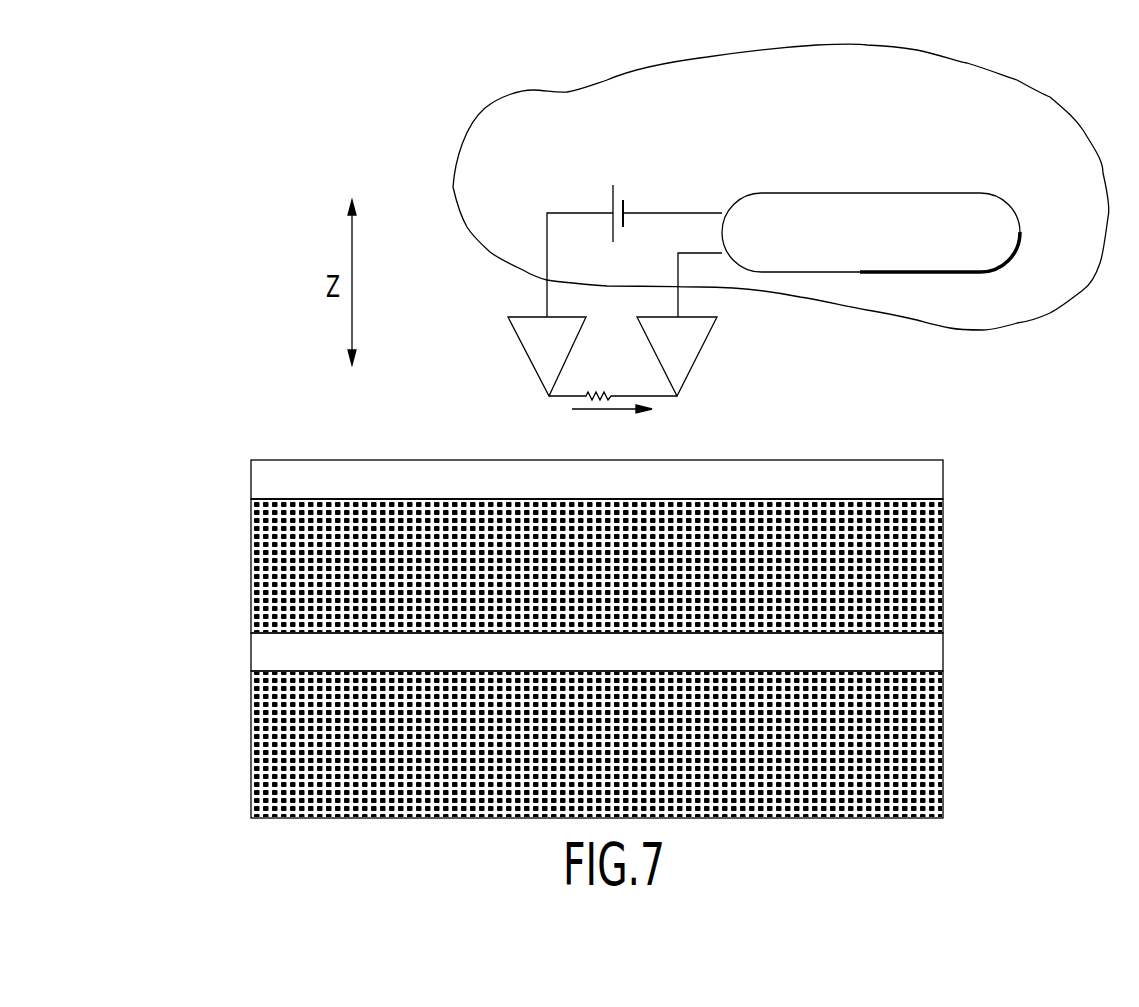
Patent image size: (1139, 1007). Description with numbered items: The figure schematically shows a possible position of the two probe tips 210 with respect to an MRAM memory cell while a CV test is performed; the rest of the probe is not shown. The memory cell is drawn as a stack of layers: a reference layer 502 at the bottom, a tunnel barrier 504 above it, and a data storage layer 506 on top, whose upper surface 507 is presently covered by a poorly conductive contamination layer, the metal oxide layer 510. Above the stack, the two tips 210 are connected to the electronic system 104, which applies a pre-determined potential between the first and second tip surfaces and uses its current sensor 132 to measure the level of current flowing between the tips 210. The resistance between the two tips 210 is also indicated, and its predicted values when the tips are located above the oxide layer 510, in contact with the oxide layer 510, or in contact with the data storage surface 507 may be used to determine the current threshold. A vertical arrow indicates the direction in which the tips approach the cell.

The electronic system 104 is at (781, 187).
The current sensor 132 is at (1010, 212).
The probe tips 210 is at (500, 355).
The metal oxide layer 510 is at (251, 486).
The upper surface 507 is at (900, 500).
The data storage layer 506 is at (943, 560).
The tunnel barrier 504 is at (251, 660).
The reference layer 502 is at (943, 740).